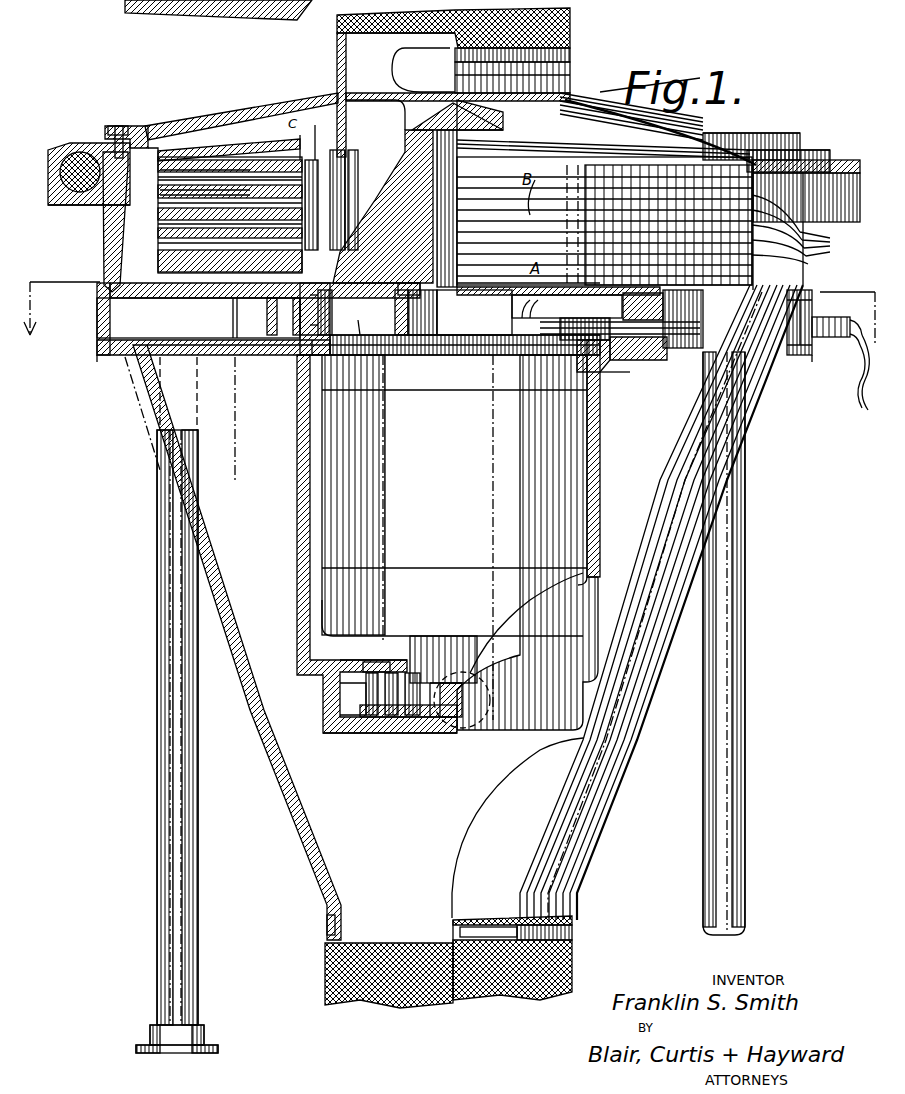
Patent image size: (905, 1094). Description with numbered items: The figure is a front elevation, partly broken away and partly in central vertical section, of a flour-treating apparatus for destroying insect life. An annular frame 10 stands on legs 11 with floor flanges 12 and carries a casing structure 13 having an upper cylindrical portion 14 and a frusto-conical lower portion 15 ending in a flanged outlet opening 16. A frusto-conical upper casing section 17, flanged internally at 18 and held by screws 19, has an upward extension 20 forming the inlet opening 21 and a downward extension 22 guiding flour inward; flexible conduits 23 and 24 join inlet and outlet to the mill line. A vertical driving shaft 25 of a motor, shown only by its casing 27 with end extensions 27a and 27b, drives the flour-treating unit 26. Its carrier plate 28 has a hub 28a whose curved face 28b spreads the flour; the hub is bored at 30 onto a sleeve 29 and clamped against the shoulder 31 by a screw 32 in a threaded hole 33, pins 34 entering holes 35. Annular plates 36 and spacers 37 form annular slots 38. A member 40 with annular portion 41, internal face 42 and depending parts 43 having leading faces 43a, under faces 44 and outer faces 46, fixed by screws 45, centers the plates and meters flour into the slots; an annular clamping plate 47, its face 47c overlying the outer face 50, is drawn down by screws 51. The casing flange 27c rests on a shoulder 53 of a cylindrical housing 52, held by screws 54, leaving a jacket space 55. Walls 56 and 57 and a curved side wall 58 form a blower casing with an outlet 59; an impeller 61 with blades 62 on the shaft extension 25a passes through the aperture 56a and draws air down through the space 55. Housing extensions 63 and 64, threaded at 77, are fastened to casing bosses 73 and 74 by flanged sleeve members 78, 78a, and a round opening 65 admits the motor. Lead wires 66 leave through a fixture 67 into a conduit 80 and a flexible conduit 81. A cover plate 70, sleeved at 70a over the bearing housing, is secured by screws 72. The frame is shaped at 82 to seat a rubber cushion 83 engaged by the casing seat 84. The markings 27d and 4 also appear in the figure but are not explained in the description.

The annulus 10 is at (856, 166).
The standards 11 is at (157, 788).
The flanges 12 is at (218, 1046).
The casing-like structure 13 is at (248, 690).
The upper cylindrical portion 14 is at (103, 242).
The lower portion 15 is at (222, 552).
The flanged outlet opening 16 is at (341, 925).
The upper casing section 17 is at (229, 115).
The internal flange 18 is at (160, 150).
The screws 19 is at (121, 126).
The cylindrical upward extension 20 is at (337, 78).
The inlet opening 21 is at (370, 45).
The downward extension 22 is at (350, 118).
The conduit 23 is at (572, 20).
The conduit 24 is at (572, 960).
The driving shaft 25 is at (432, 322).
The lower extension of the motor shaft 25a is at (462, 720).
The flour-treating unit 26 is at (232, 148).
The motor casing 27 is at (598, 462).
The end extension 27a is at (400, 298).
The end extension 27b is at (460, 648).
The end flange 27c is at (438, 342).
The rotating wall 27d is at (627, 546).
The carrier plate 28 is at (160, 268).
The hub 28a is at (422, 132).
The upper curved face 28b is at (395, 300).
The sleeve 29 is at (460, 180).
The bore 30 is at (450, 108).
The shoulder 31 is at (488, 272).
The screw 32 is at (470, 110).
The threaded hole 33 is at (405, 150).
The pins 34 is at (474, 312).
The holes 35 is at (548, 272).
The annular members 36 is at (575, 212).
The spacers 37 is at (160, 193).
The annular slots 38 is at (205, 200).
The member 40 is at (327, 312).
The annular portion 41 is at (346, 140).
The internal frusto-conical face 42 is at (350, 150).
The depending parts 43 is at (358, 150).
The leading faces 43a is at (363, 327).
The under faces 44 is at (308, 300).
The screws 45 is at (308, 322).
The outer faces 46 is at (266, 316).
The annular clamping plate 47 is at (222, 150).
The inner frusto-conical face 47c is at (308, 139).
The outer frusto-conical face 50 is at (313, 133).
The screws 51 is at (595, 143).
The cylindrical housing 52 is at (297, 445).
The internal shoulder 53 is at (610, 362).
The screws 54 is at (305, 358).
The annular space 55 is at (600, 503).
The upper wall 56 is at (350, 660).
The aperture 56a is at (372, 662).
The lower wall 57 is at (360, 734).
The side wall 58 is at (353, 698).
The tube-like outlet 59 is at (490, 725).
The air impeller 61 is at (405, 716).
The impeller blades 62 is at (380, 716).
The tube-like extension 63 is at (240, 357).
The tube-like extension 64 is at (672, 362).
The round opening 65 is at (612, 374).
The lead wires 66 is at (867, 378).
The tube-like fixture 67 is at (545, 325).
The cover plate 70 is at (578, 322).
The sleeve 70a is at (408, 350).
The screws 72 is at (288, 316).
The tube-like boss 73 is at (122, 358).
The tube-like boss 74 is at (790, 358).
The internal threads 77 is at (216, 357).
The sleeve member 78 is at (97, 350).
The external flange 78a is at (100, 362).
The conduit 80 is at (820, 316).
The flexible conduit 81 is at (860, 316).
The seat 82 is at (75, 206).
The cushioning member 83 is at (70, 155).
The seat 84 is at (95, 142).
The section line 4 is at (451, 313).